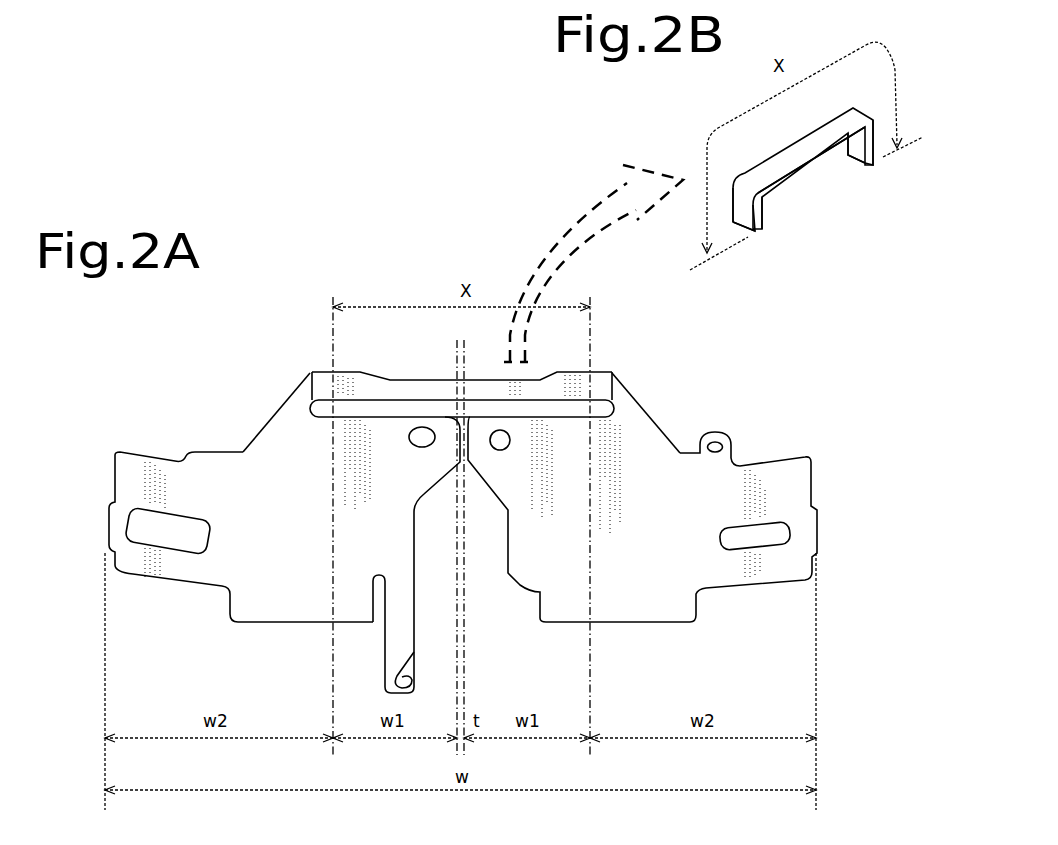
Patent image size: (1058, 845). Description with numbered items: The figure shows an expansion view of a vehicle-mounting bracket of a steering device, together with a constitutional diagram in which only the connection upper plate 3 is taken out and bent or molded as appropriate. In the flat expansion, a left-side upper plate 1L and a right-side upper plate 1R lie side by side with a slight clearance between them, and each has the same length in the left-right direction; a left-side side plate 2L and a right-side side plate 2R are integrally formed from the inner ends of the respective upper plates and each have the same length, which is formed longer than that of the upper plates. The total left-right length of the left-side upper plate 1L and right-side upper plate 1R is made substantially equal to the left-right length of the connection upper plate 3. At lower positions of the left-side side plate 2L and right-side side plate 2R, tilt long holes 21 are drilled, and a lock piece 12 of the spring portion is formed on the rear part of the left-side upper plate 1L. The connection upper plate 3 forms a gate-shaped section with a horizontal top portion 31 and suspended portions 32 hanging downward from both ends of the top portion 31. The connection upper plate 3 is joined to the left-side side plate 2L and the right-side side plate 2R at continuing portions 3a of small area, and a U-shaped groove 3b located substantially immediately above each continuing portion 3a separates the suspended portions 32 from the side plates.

In FIG. 2A, the connection upper plate 3 is at (483, 374).
In FIG. 2B, the connection upper plate 3 is at (797, 180).
In FIG. 2A, the continuing portion 3a is at (302, 404).
In FIG. 2A, the U-shaped groove 3b is at (312, 372).
In FIG. 2B, the horizontal top portion 31 is at (820, 152).
In FIG. 2B, the suspended portion 32 is at (758, 210).
In FIG. 2A, the left-side upper plate 1L is at (412, 478).
In FIG. 2A, the right-side upper plate 1R is at (520, 556).
In FIG. 2A, the lock piece 12 is at (415, 655).
In FIG. 2A, the left-side side plate 2L is at (272, 590).
In FIG. 2A, the right-side side plate 2R is at (717, 576).
In FIG. 2A, the tilt long hole 21 is at (157, 552).